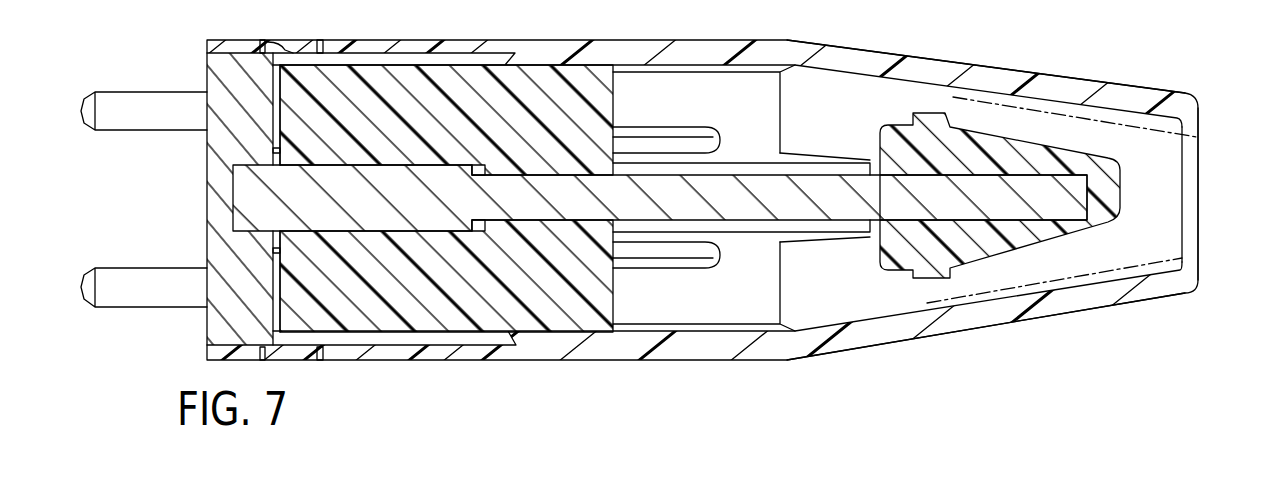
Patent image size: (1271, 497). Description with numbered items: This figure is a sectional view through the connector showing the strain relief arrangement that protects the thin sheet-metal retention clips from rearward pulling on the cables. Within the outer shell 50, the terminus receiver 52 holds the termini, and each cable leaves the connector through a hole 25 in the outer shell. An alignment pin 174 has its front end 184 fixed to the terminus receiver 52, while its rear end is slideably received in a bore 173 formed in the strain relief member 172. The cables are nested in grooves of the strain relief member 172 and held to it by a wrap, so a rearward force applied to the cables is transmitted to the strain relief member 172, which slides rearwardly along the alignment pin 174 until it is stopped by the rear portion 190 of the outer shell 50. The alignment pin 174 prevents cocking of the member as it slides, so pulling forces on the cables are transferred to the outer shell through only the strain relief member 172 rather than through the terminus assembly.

The hole 25 is at (1195, 245).
The outer shell 50 is at (606, 366).
The terminus receiver 52 is at (532, 336).
The strain relief member 172 is at (893, 268).
The bore 173 is at (997, 207).
The alignment pin 174 is at (757, 220).
The front end 184 is at (390, 222).
The rear portion 190 is at (1073, 313).